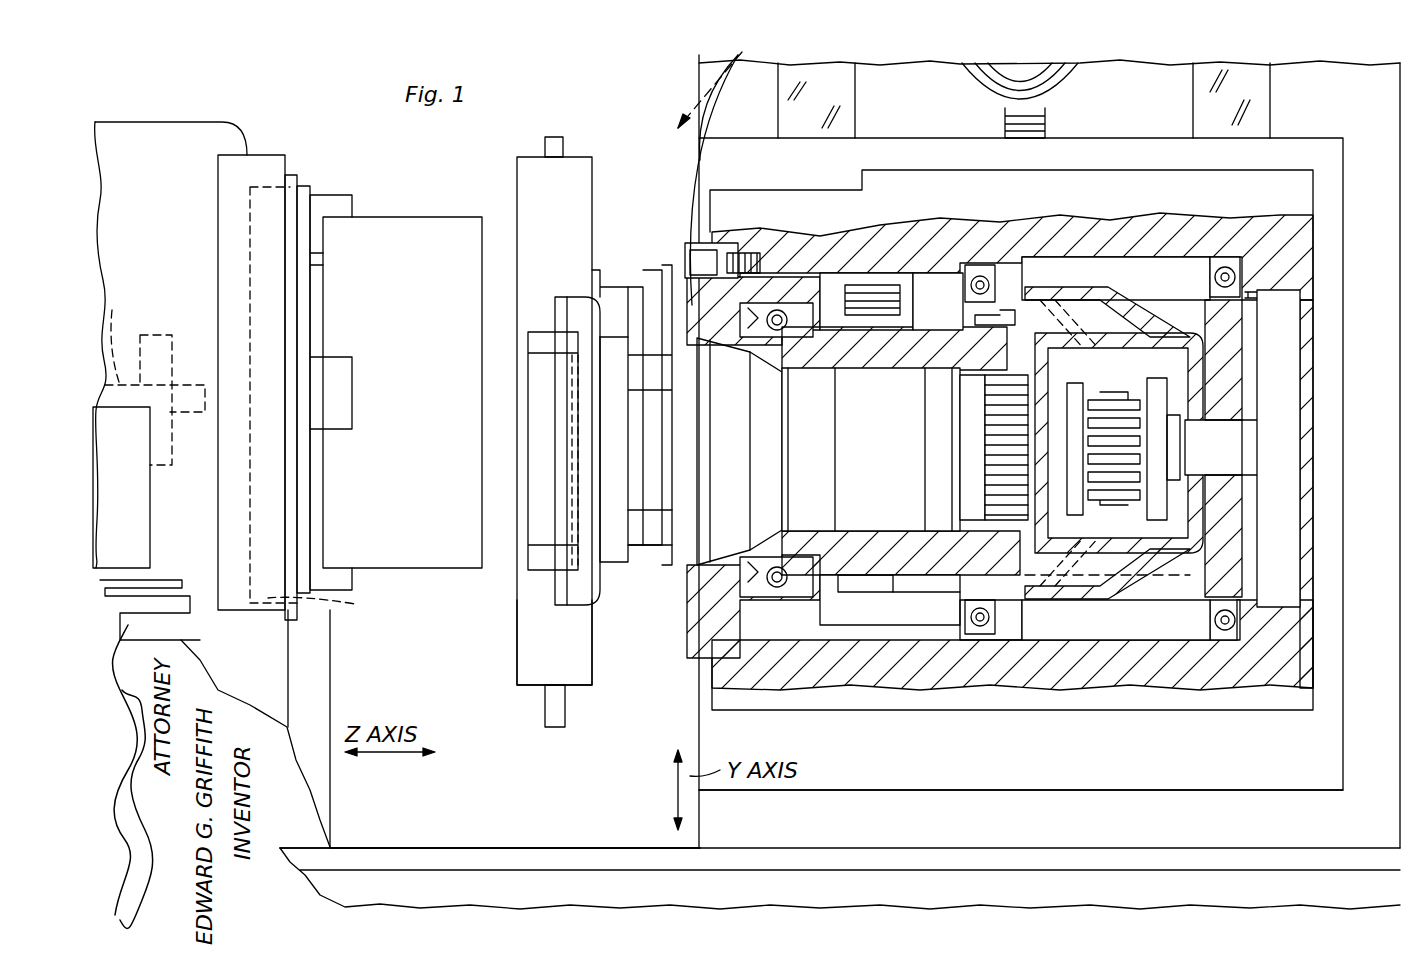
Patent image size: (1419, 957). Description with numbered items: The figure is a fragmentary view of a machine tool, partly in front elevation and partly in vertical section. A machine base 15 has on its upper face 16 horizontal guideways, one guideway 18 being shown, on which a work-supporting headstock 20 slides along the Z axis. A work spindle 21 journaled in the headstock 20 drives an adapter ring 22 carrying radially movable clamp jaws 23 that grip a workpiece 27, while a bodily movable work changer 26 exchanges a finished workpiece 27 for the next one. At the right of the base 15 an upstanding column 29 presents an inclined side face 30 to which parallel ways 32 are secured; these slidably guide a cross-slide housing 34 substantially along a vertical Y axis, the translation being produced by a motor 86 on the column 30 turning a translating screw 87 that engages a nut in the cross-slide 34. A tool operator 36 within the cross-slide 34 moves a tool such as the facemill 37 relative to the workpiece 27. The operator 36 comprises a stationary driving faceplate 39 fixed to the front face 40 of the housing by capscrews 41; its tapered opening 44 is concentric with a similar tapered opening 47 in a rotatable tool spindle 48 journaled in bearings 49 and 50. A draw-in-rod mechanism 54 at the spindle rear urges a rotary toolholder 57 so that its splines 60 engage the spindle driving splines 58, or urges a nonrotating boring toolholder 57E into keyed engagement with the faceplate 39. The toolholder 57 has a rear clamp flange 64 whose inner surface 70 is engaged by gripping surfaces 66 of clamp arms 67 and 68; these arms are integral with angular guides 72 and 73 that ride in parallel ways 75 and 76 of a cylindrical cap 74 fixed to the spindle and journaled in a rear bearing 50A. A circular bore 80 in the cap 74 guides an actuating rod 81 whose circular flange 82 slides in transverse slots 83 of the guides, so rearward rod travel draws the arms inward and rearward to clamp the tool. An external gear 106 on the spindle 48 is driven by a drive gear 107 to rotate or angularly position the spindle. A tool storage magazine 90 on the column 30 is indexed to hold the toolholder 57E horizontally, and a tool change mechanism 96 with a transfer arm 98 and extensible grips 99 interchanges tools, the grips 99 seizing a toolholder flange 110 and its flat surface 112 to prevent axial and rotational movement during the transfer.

The machine base 15 is at (982, 899).
The upper face 16 is at (540, 835).
The guideway 18 is at (362, 858).
The work-supporting headstock 20 is at (170, 204).
The work-supporting spindle 21 is at (108, 332).
The adapter ring 22 is at (319, 403).
The clamp jaws 23 is at (320, 190).
The work changer 26 is at (255, 165).
The workpiece 27 is at (434, 560).
The column 29 is at (1088, 830).
The inclined side face 30 is at (1160, 122).
The parallel ways 32 is at (848, 100).
The cross-slide housing 34 is at (1178, 265).
The tool operator 36 is at (683, 585).
The facemill 37 is at (560, 312).
The driving faceplate 39 is at (693, 303).
The front face 40 is at (735, 702).
The capscrew 41 is at (703, 248).
The tapered opening 44 is at (724, 357).
The tapered opening 47 is at (765, 550).
The tool spindle 48 is at (925, 560).
The bearing 49 is at (790, 315).
The bearing 50 is at (962, 622).
The rear bearing 50A is at (1208, 632).
The draw-in-rod mechanism 54 is at (1250, 552).
The toolholder 57 is at (890, 452).
The toolholder 57E is at (652, 300).
The driving splines 58 is at (995, 398).
The splines 60 is at (1012, 452).
The clamp flange 64 is at (1072, 440).
The gripping surfaces 66 is at (1085, 320).
The clamp arm 67 is at (1132, 360).
The clamp arm 68 is at (1068, 615).
The surface 70 is at (1083, 498).
The clamp guide 72 is at (1112, 295).
The clamp guide 73 is at (1110, 592).
The cylindrical cap 74 is at (1245, 336).
The parallel way 75 is at (1075, 290).
The parallel way 76 is at (1210, 285).
The circular bore 80 is at (1225, 468).
The actuating rod 81 is at (1252, 438).
The circular flange 82 is at (1165, 398).
The transverse slots 83 is at (1170, 440).
The motor 86 is at (1075, 68).
The translating screw 87 is at (1003, 115).
The tool storage magazine 90 is at (692, 160).
The tool change mechanism 96 is at (515, 183).
The tool change transfer arm 98 is at (532, 683).
The tool grips 99 is at (562, 148).
The external gear 106 is at (852, 585).
The drive gear 107 is at (868, 302).
The flange 110 is at (656, 555).
The flat surface 112 is at (668, 449).